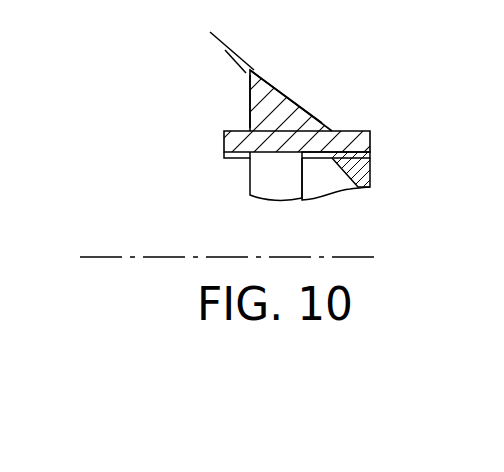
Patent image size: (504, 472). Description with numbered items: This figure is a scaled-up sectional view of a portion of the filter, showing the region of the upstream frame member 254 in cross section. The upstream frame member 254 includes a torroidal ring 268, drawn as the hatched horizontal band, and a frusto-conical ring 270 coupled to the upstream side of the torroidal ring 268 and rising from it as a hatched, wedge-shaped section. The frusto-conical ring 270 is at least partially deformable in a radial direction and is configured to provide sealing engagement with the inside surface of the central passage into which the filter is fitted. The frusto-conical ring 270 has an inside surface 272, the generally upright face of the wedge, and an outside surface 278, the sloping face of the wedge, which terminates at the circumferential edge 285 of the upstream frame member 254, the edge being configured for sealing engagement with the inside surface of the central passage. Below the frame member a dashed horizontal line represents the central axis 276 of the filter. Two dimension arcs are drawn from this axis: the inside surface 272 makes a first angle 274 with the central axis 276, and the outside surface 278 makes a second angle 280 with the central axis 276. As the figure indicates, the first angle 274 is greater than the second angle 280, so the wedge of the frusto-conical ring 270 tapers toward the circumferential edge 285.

The upstream frame member 254 is at (368, 147).
The torroidal ring 268 is at (362, 131).
The frusto-conical ring 270 is at (332, 103).
The inside surface 272 is at (268, 128).
The first angle 274 is at (227, 60).
The central axis 276 is at (292, 257).
The outside surface 278 is at (303, 107).
The second angle 280 is at (208, 43).
The circumferential edge 285 is at (250, 71).